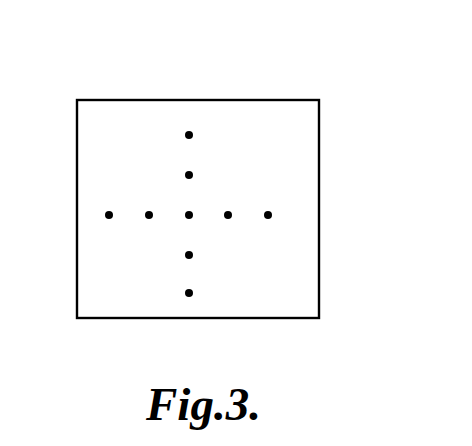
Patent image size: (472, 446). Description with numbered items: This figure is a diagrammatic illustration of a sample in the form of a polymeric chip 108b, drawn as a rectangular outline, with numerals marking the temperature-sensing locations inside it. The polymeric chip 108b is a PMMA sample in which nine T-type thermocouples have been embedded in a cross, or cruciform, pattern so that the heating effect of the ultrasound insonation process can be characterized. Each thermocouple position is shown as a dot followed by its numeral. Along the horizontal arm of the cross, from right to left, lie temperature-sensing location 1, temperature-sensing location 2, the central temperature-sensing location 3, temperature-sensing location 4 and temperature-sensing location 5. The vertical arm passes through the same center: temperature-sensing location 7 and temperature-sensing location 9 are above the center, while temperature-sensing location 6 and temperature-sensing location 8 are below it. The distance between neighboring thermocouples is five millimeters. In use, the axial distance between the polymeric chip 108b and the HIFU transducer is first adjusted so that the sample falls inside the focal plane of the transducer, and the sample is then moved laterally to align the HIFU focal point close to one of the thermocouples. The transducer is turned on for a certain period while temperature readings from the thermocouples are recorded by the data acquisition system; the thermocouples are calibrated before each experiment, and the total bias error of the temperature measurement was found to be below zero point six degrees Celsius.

The polymeric chip 108b is at (249, 100).
The temperature-sensing location 1 is at (278, 214).
The temperature-sensing location 2 is at (238, 214).
The temperature-sensing location 3 is at (199, 214).
The temperature-sensing location 4 is at (159, 214).
The temperature-sensing location 5 is at (119, 214).
The temperature-sensing location 6 is at (199, 254).
The temperature-sensing location 7 is at (199, 174).
The temperature-sensing location 8 is at (199, 294).
The temperature-sensing location 9 is at (199, 134).